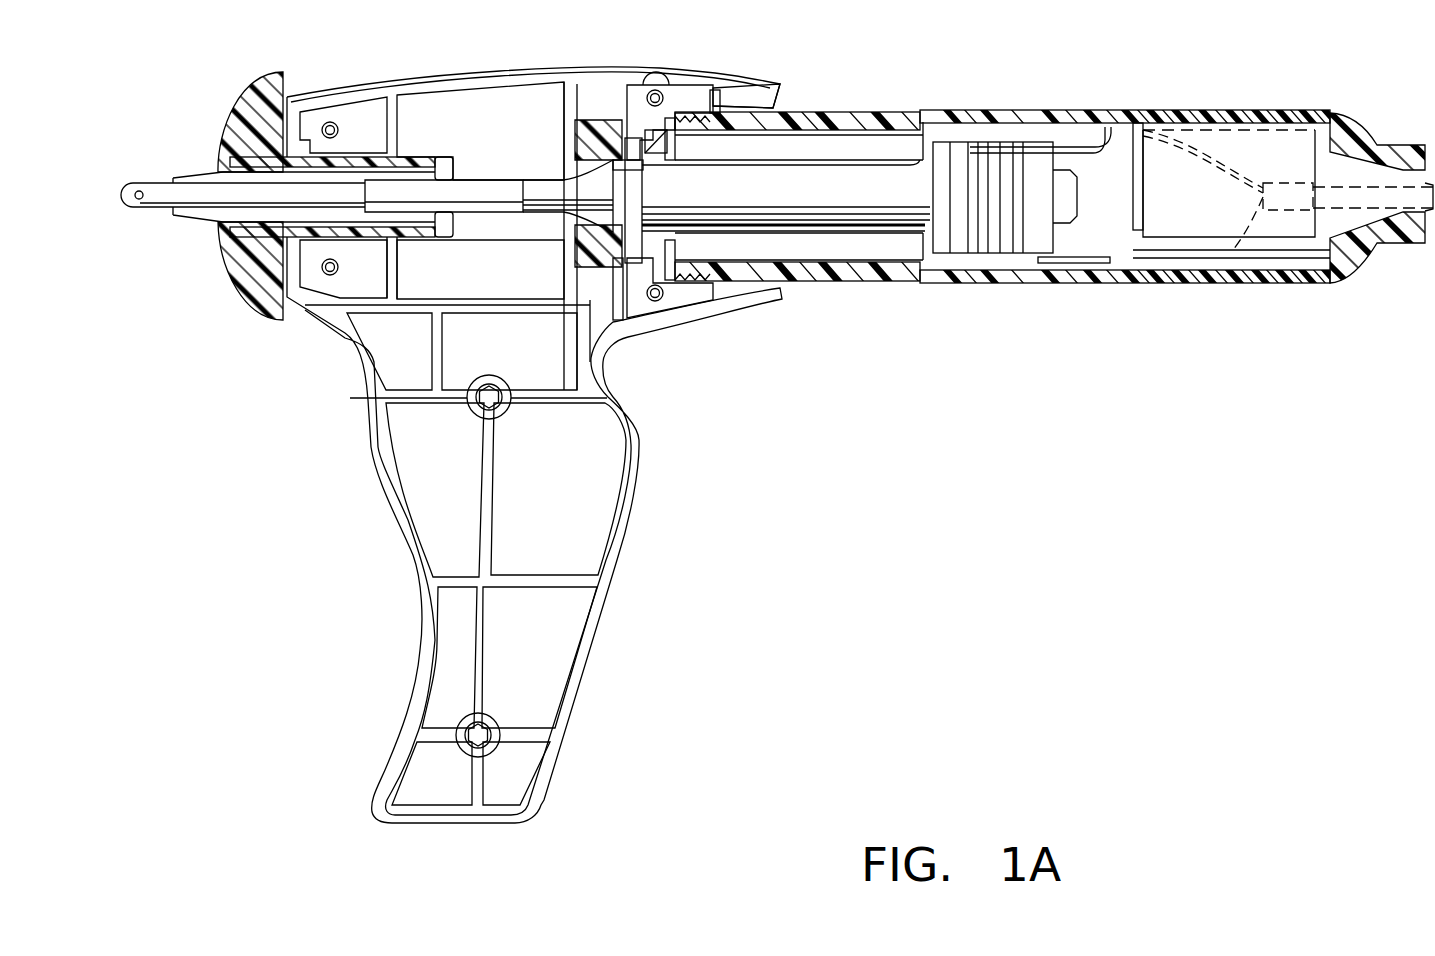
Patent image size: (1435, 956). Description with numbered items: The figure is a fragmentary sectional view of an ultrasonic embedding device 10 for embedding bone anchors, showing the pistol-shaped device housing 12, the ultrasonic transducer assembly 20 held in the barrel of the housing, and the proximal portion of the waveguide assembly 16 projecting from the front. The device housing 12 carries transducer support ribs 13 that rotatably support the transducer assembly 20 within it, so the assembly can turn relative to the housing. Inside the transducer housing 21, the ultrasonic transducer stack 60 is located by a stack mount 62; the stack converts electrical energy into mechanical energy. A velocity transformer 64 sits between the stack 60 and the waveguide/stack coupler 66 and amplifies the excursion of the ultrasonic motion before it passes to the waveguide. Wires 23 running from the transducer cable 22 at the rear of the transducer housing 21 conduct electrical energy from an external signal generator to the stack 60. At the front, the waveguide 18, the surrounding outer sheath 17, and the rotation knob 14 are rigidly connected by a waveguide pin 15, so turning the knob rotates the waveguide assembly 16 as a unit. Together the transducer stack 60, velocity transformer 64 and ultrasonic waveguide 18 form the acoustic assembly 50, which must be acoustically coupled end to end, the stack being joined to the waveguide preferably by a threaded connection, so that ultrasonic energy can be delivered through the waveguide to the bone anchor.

The ultrasonic embedding device 10 is at (830, 490).
The device housing 12 is at (630, 500).
The transducer support ribs 13 is at (613, 93).
The rotation knob 14 is at (260, 73).
The waveguide pin 15 is at (441, 157).
The waveguide assembly 16 is at (187, 242).
The outer sheath 17 is at (198, 172).
The waveguide 18 is at (168, 177).
The ultrasonic transducer assembly 20 is at (1047, 327).
The transducer housing 21 is at (1000, 110).
The transducer cable 22 is at (1290, 183).
The wires 23 is at (1127, 135).
The acoustic assembly 50 is at (842, 160).
The ultrasonic transducer stack 60 is at (943, 235).
The stack mount 62 is at (627, 130).
The velocity transformer 64 is at (605, 198).
The waveguide/stack coupler 66 is at (523, 185).